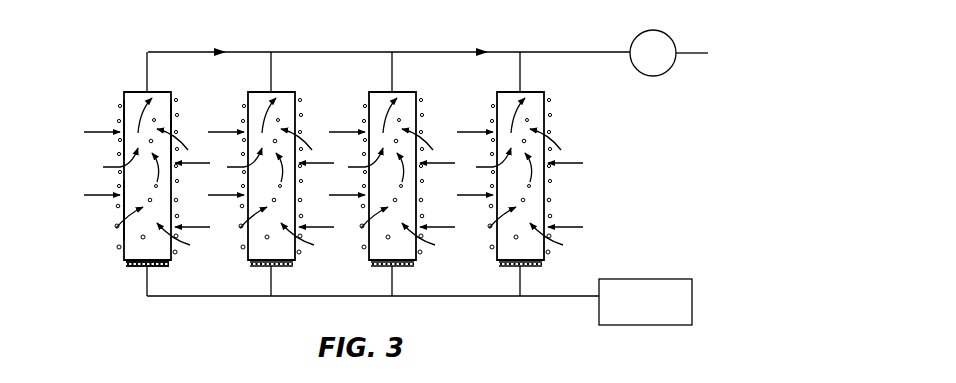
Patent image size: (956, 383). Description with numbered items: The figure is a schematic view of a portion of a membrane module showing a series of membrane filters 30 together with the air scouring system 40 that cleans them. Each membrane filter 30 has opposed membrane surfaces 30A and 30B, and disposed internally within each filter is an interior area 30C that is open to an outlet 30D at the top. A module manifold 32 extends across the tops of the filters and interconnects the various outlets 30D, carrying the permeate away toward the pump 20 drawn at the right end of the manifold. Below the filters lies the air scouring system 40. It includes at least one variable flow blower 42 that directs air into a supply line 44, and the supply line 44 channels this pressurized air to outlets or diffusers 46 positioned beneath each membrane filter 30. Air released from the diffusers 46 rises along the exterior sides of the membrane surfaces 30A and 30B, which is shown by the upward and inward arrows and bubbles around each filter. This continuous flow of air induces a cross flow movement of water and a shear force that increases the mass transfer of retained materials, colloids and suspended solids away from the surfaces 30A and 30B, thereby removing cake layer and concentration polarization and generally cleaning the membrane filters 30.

The pump 20 is at (666, 37).
The membrane filter 30 is at (128, 82).
The membrane surface 30A is at (121, 124).
The membrane surface 30B is at (173, 124).
The interior area 30C is at (138, 195).
The outlet 30D is at (150, 90).
The module manifold 32 is at (565, 52).
The air scouring system 40 is at (156, 311).
The variable flow blower 42 is at (663, 279).
The supply line 44 is at (446, 296).
The diffuser 46 is at (135, 268).